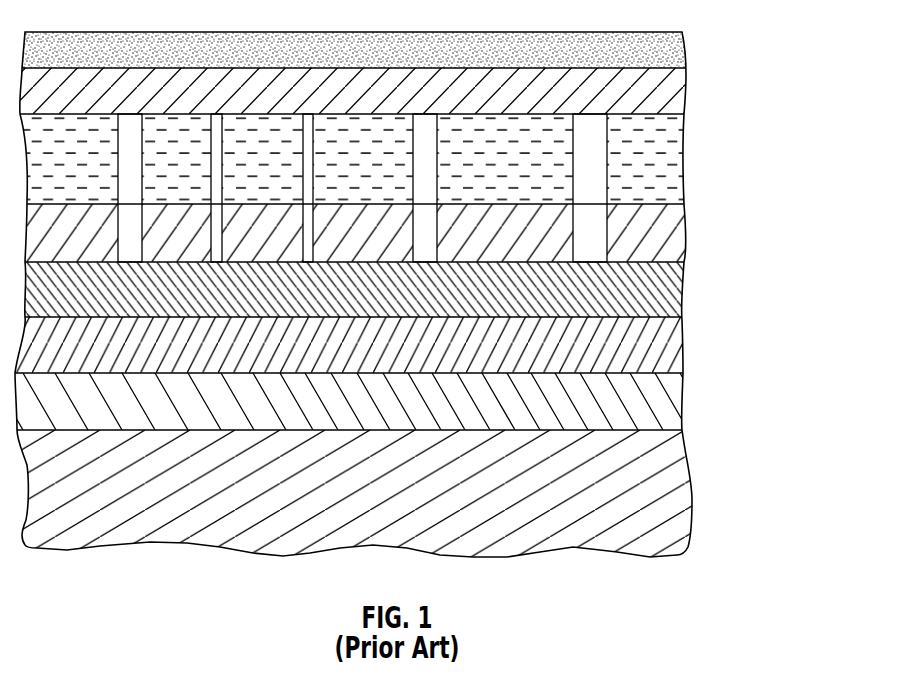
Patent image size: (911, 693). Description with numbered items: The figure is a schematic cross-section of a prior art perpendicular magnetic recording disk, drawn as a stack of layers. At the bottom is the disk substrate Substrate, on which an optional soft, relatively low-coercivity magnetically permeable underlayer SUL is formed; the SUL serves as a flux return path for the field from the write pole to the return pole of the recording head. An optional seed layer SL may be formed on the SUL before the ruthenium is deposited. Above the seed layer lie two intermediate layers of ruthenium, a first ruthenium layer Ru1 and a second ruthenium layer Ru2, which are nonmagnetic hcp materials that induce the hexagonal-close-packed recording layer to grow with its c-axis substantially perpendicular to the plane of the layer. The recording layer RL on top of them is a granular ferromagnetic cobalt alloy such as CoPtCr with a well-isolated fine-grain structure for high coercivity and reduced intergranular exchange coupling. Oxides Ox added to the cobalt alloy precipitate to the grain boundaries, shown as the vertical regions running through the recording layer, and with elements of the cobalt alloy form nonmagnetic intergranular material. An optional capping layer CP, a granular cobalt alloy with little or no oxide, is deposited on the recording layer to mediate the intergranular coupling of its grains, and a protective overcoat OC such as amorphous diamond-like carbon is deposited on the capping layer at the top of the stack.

The protective overcoat OC is at (718, 32).
The capping layer CP is at (718, 68).
The oxides Ox is at (590, 113).
The recording layer RL is at (718, 114).
The second ruthenium intermediate layer Ru2 is at (718, 204).
The first ruthenium intermediate layer Ru1 is at (718, 262).
The seed layer SL is at (718, 317).
The soft underlayer SUL is at (718, 373).
The disk substrate Substrate is at (718, 430).